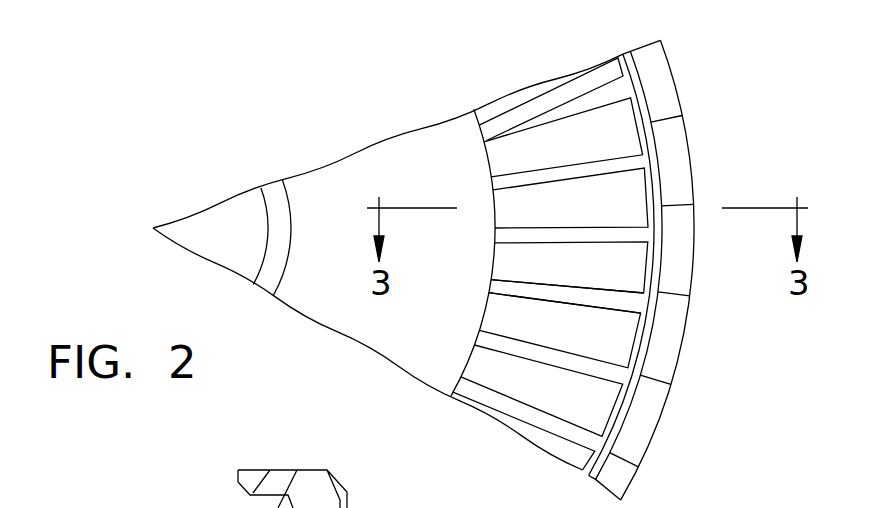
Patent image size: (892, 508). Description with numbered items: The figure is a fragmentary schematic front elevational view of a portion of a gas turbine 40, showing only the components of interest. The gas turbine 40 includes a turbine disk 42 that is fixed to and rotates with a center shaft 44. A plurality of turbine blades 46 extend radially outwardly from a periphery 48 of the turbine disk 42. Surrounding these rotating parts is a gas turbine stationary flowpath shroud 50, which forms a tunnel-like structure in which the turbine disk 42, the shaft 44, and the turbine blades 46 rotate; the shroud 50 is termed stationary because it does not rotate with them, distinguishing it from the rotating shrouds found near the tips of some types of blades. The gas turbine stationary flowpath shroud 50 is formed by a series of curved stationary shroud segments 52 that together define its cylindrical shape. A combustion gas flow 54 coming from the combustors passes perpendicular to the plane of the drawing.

The gas turbine 40 is at (295, 118).
The turbine disk 42 is at (357, 176).
The center shaft 44 is at (210, 222).
The turbine blades 46 is at (503, 207).
The periphery 48 is at (472, 113).
The gas turbine stationary flowpath shroud 50 is at (628, 52).
The stationary shroud segments 52 is at (602, 463).
The combustion gas flow 54 is at (620, 303).